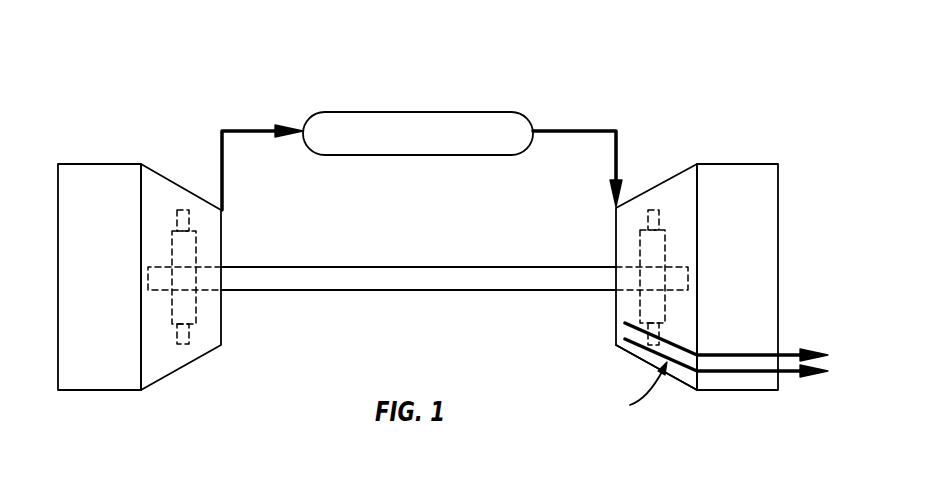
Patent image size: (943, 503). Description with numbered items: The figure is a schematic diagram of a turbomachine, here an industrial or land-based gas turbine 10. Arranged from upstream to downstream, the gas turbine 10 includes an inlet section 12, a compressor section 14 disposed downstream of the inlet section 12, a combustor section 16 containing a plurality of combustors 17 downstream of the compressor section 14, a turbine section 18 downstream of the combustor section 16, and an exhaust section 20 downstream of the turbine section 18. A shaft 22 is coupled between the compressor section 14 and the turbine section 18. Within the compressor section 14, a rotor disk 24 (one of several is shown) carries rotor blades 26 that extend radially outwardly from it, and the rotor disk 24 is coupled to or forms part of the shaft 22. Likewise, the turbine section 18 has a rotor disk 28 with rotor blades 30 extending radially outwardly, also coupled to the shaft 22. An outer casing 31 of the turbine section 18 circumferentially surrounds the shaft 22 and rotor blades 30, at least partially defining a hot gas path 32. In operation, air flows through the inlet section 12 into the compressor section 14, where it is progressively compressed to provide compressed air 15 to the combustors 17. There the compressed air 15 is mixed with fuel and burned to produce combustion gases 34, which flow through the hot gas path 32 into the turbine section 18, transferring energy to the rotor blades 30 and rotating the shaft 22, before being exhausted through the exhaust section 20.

The gas turbine 10 is at (266, 50).
The inlet section 12 is at (77, 163).
The compressor section 14 is at (167, 177).
The compressed air 15 is at (252, 133).
The combustor section 16 is at (431, 108).
The combustors 17 is at (473, 112).
The turbine section 18 is at (668, 175).
The exhaust section 20 is at (755, 163).
The shaft 22 is at (378, 292).
The rotor disk 24 is at (172, 240).
The rotor blades 26 is at (177, 218).
The rotor disk 28 is at (640, 250).
The rotor blades 30 is at (653, 210).
The outer casing 31 is at (690, 388).
The hot gas path 32 is at (634, 392).
The combustion gases 34 is at (583, 133).